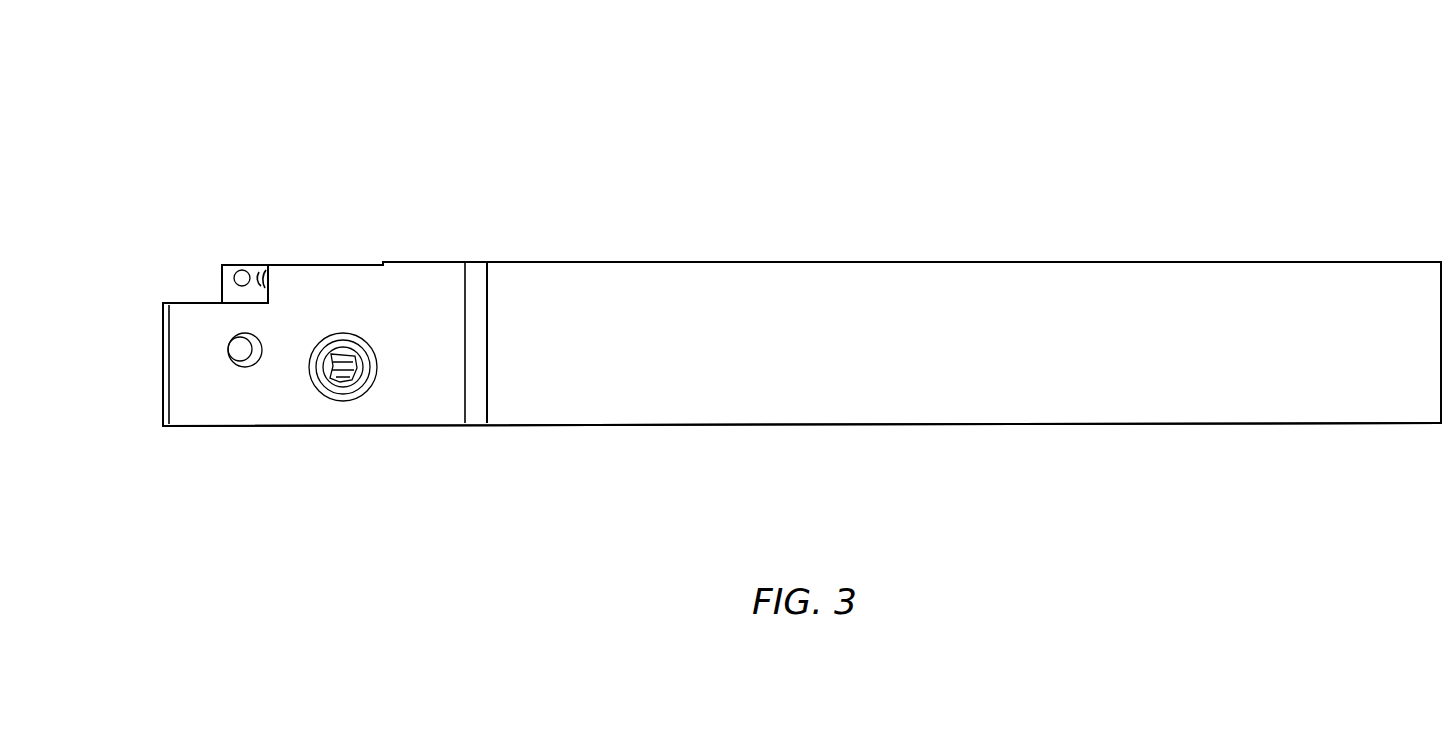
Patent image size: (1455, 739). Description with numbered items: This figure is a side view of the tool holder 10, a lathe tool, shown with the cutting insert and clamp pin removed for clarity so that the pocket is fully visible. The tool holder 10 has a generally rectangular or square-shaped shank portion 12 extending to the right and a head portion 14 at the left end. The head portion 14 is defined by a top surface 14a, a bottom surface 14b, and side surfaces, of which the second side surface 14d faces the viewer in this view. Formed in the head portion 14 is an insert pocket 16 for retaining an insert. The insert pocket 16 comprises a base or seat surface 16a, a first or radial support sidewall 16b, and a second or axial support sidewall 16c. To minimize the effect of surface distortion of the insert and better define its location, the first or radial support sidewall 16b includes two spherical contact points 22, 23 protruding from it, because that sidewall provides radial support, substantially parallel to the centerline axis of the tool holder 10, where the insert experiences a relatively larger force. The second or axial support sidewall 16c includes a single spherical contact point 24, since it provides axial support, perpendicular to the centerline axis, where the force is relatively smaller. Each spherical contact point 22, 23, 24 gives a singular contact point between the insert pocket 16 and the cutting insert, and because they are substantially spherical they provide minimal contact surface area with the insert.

The tool holder 10 is at (992, 100).
The shank portion 12 is at (1234, 250).
The head portion 14 is at (369, 251).
The top surface 14a is at (340, 265).
The bottom surface 14b is at (435, 427).
The second side surface 14d is at (414, 328).
The insert pocket 16 is at (165, 288).
The seat surface 16a is at (198, 303).
The first or radial support sidewall 16b is at (226, 265).
The second or axial support sidewall 16c is at (263, 265).
The spherical contact point 22 is at (243, 268).
The spherical contact point 23 is at (258, 265).
The spherical contact point 24 is at (262, 282).